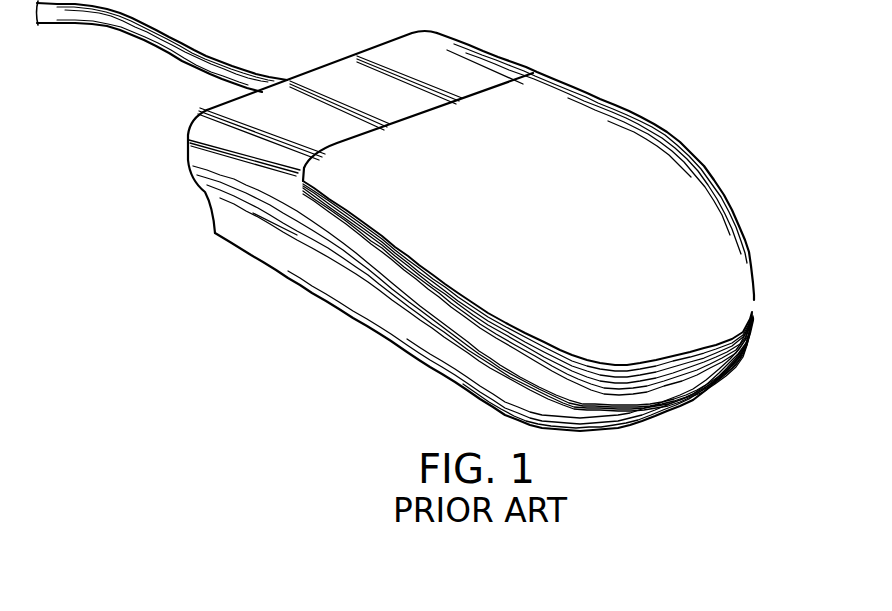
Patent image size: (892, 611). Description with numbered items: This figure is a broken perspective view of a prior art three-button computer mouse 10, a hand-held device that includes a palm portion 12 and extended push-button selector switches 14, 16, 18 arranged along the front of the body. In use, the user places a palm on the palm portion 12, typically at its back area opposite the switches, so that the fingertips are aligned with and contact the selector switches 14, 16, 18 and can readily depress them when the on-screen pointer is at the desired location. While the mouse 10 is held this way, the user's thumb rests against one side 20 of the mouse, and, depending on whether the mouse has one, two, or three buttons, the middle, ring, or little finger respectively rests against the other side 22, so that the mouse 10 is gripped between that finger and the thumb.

The computer mouse 10 is at (288, 355).
The palm portion 12 is at (581, 286).
The push-button selector switch 14 is at (313, 129).
The push-button selector switch 16 is at (389, 101).
The push-button selector switch 18 is at (459, 77).
The side of the mouse 20 is at (378, 316).
The other side of the mouse 22 is at (653, 125).